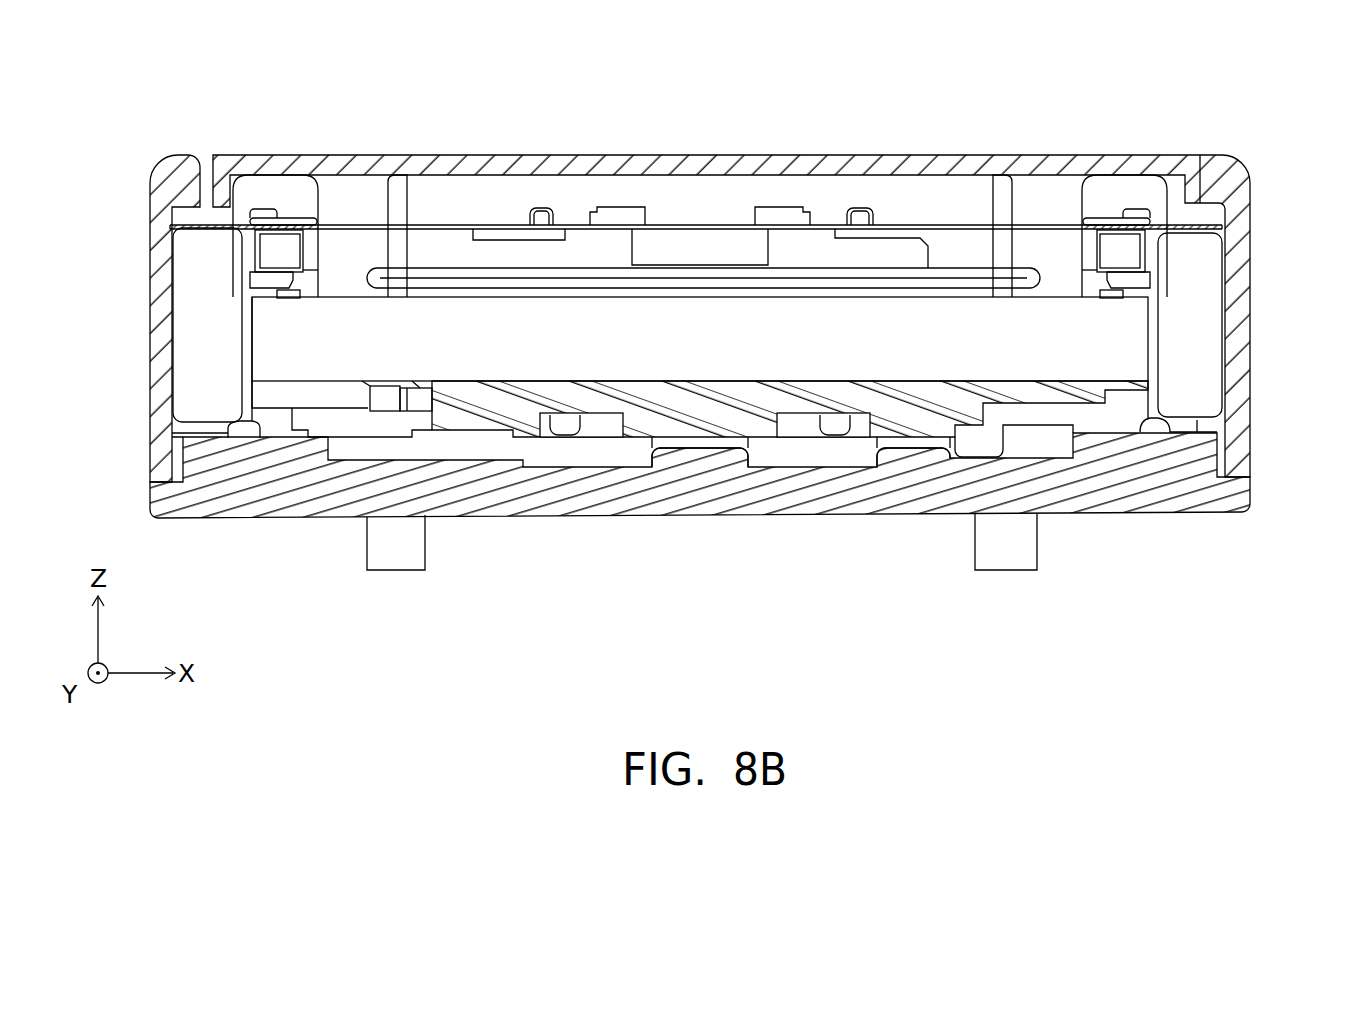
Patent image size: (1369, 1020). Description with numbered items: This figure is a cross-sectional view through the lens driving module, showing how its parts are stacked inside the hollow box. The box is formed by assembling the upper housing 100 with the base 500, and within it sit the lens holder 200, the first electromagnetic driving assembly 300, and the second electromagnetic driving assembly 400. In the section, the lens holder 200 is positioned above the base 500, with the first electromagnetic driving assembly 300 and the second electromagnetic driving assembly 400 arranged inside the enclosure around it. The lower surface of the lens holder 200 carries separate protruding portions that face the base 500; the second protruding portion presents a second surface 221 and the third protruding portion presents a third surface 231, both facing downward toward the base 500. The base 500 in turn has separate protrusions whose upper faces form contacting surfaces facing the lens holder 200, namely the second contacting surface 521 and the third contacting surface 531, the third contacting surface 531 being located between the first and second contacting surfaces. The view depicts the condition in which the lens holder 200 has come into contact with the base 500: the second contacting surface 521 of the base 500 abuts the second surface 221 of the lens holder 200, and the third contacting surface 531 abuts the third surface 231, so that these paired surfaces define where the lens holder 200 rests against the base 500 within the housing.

The upper housing 100 is at (160, 384).
The lens holder 200 is at (700, 498).
The second surface 221 is at (713, 450).
The third surface 231 is at (920, 455).
The first electromagnetic driving assembly 300 is at (287, 343).
The second electromagnetic driving assembly 400 is at (200, 302).
The base 500 is at (744, 326).
The second contacting surface 521 is at (682, 445).
The third contacting surface 531 is at (918, 448).